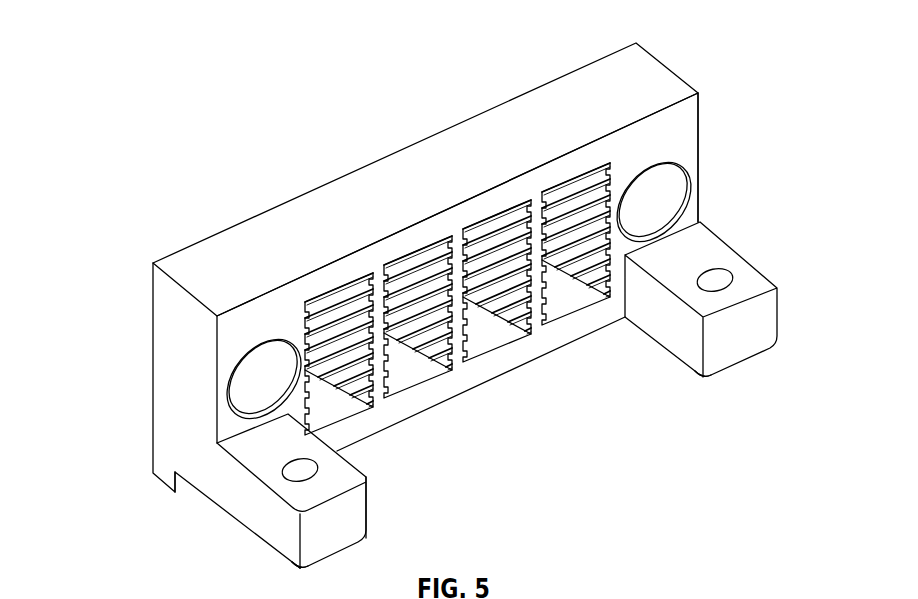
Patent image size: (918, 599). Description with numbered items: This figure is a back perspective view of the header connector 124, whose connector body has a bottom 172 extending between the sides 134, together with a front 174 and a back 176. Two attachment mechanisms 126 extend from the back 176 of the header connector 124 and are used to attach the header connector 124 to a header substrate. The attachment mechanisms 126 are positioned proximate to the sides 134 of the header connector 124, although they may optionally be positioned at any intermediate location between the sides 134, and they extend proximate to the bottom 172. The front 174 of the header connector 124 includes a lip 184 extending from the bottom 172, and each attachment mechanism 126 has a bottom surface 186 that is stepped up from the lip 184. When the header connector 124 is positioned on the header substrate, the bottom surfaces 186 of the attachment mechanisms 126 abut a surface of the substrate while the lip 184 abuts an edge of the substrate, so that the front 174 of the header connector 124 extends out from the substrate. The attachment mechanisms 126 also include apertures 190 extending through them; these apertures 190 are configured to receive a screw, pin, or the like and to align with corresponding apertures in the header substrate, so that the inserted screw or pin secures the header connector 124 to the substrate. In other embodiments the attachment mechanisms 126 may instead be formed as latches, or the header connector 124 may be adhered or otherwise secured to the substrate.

The header connector 124 is at (438, 303).
The front 174 is at (322, 140).
The sides 134 is at (117, 393).
The back 176 is at (733, 167).
The attachment mechanisms 126 is at (252, 518).
The apertures 190 is at (305, 470).
The bottom surface 186 is at (297, 560).
The bottom 172 is at (470, 410).
The lip 184 is at (185, 483).